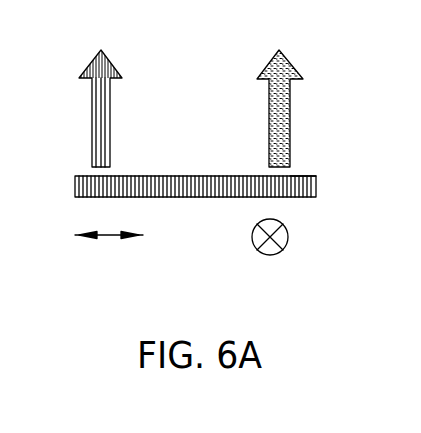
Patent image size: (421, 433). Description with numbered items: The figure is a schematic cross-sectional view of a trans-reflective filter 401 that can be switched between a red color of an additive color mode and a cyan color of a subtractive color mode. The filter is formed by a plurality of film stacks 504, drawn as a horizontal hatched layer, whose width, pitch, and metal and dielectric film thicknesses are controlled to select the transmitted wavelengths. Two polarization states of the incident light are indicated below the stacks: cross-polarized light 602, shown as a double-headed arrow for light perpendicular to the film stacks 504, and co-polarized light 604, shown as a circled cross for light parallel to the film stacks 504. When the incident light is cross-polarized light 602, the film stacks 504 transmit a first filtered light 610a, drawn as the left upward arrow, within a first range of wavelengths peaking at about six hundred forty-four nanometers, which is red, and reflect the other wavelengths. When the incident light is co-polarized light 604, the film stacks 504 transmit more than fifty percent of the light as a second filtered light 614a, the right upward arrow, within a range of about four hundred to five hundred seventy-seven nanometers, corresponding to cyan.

The trans-reflective filter 401 is at (317, 186).
The plurality of film stacks 504 is at (314, 177).
The cross-polarized light 602 is at (107, 238).
The co-polarized light 604 is at (270, 255).
The first filtered light 610a is at (112, 108).
The second filtered light 614a is at (269, 124).